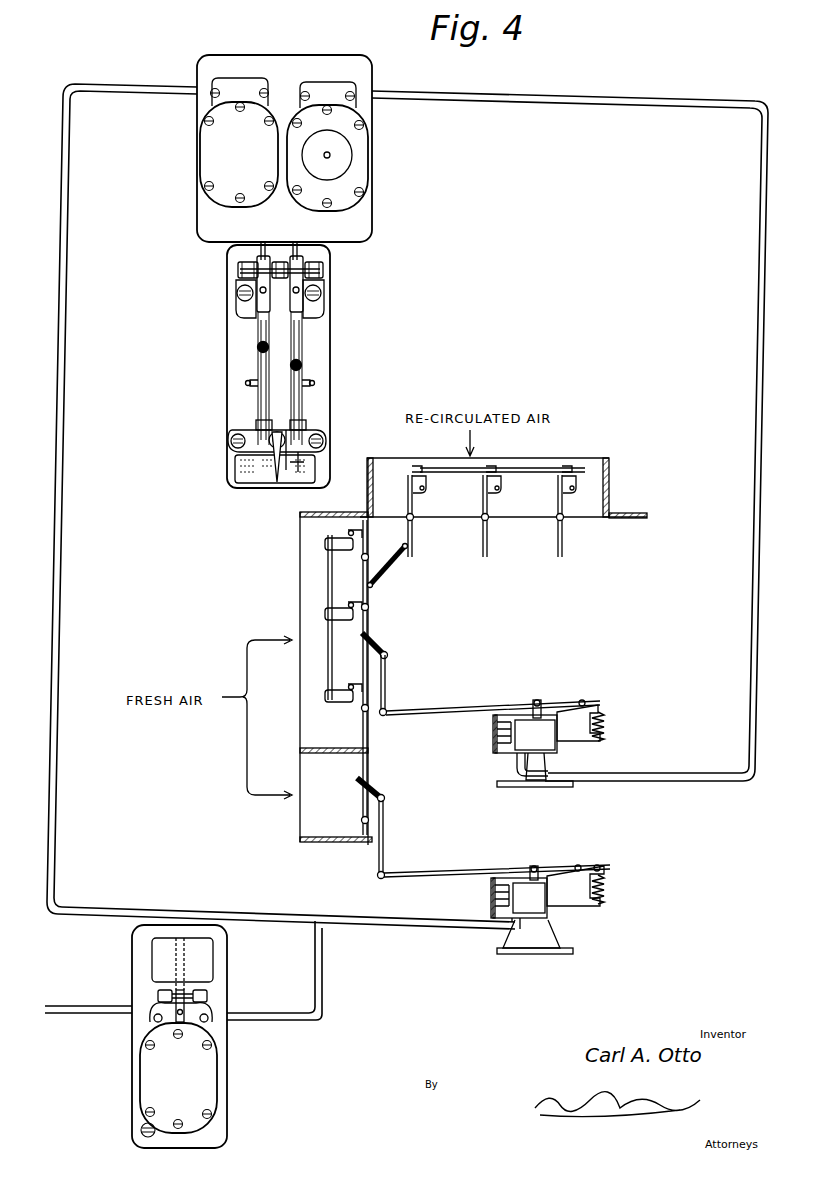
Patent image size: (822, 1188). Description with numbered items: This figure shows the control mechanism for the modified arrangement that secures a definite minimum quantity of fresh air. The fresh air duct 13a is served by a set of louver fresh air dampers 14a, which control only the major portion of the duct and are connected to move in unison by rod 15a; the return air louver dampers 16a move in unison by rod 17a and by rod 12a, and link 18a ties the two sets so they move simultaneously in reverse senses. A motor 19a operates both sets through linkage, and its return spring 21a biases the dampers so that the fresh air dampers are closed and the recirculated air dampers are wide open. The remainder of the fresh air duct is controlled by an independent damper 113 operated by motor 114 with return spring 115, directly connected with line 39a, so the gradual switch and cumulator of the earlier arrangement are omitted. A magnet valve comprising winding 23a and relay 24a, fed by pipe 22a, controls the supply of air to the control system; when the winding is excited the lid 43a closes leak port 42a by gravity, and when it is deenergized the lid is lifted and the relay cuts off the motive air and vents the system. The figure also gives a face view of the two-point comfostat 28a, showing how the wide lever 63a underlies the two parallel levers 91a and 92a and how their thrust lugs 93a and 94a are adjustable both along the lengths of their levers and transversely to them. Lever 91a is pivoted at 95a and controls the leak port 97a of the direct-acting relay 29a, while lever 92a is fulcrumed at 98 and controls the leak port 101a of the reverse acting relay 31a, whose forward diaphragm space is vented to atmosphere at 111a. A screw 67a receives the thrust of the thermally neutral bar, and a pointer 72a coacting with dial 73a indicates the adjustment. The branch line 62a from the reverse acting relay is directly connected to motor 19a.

The rod 12a is at (530, 468).
The fresh air duct 13a is at (314, 588).
The fresh air dampers 14a is at (370, 620).
The rod 15a is at (328, 662).
The return air louver dampers 16a is at (488, 548).
The rod 17a is at (458, 478).
The link 18a is at (390, 564).
The motor 19a is at (560, 718).
The return spring 21a is at (606, 728).
The pipe 22a is at (64, 1013).
The winding 23a is at (205, 960).
The relay 24a is at (196, 1075).
The two-point comfostat 28a is at (326, 305).
The direct-acting relay 29a is at (225, 150).
The reverse acting relay 31a is at (346, 155).
The line 39a is at (67, 233).
The leak port 42a is at (178, 1012).
The lid 43a is at (200, 1007).
The branch line 62a is at (762, 190).
The lever 63a is at (276, 372).
The screw 67a is at (240, 428).
The pointer 72a is at (276, 482).
The dial 73a is at (242, 474).
The lever 91a is at (258, 302).
The lever 92a is at (302, 338).
The thrust lug 93a is at (258, 348).
The thrust lug 94a is at (300, 366).
The pivot 95a is at (246, 262).
The leak port 97a is at (236, 288).
The fulcrum 98 is at (286, 248).
The leak port 101a is at (306, 283).
The atmospheric vent 111a is at (331, 158).
The independent damper 113 is at (368, 765).
The motor 114 is at (493, 893).
The return spring 115 is at (604, 893).